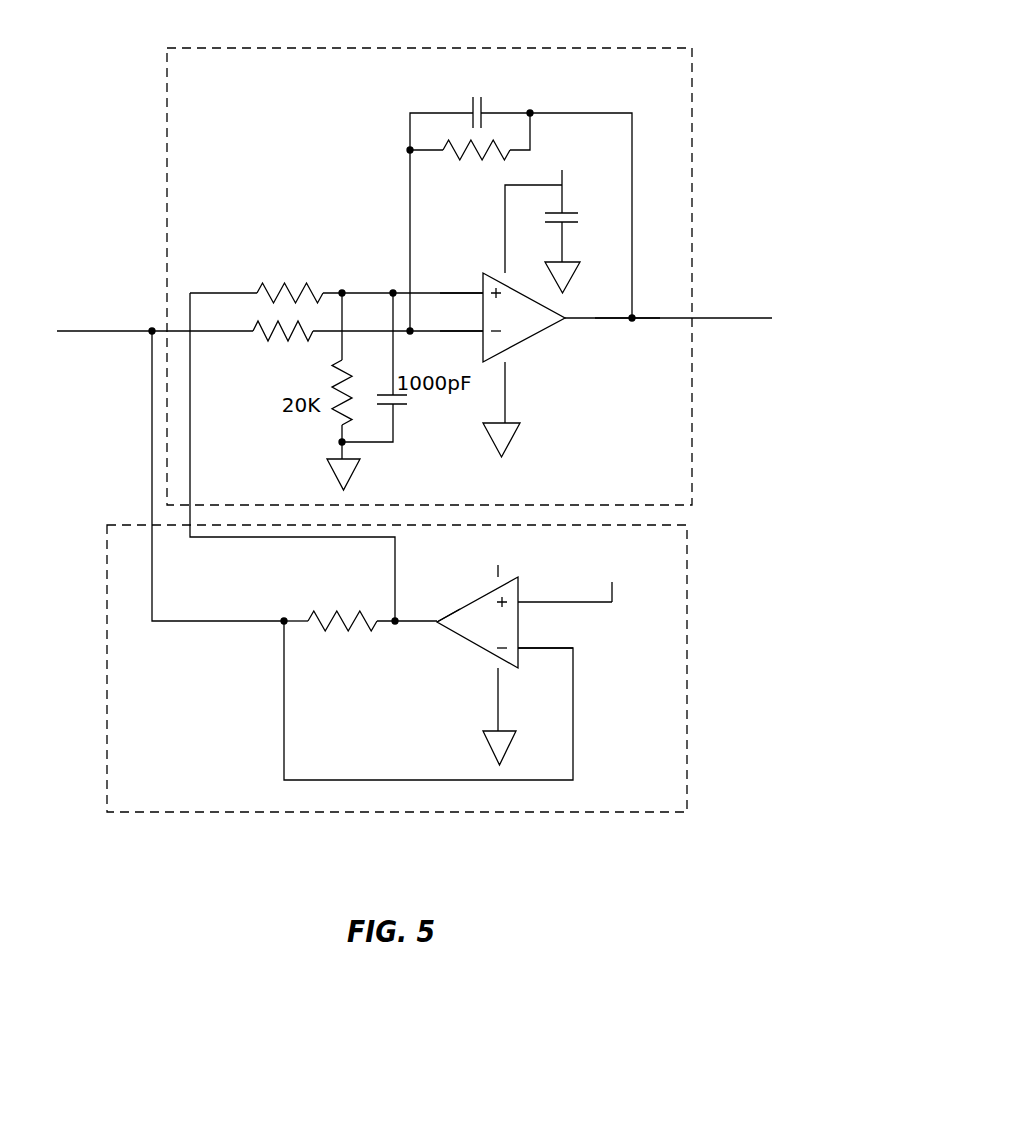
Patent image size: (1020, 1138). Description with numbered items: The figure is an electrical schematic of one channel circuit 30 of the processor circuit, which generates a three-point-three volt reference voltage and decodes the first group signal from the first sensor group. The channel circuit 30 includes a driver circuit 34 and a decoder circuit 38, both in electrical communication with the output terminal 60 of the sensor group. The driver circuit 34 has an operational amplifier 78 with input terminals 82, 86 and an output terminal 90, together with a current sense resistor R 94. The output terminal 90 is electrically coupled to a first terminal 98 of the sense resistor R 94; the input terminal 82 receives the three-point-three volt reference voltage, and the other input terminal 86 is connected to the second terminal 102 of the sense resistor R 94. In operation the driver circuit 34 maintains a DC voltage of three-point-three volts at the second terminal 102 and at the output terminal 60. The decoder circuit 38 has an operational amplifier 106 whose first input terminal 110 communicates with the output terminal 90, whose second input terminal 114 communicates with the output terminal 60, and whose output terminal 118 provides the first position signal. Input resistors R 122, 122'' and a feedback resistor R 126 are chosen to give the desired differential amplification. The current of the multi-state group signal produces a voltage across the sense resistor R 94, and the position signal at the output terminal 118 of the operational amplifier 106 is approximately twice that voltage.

The channel circuit 30 is at (782, 80).
The decoder circuit 38 is at (692, 180).
The driver circuit 34 is at (687, 629).
The output terminal 60 is at (138, 331).
The input resistor 122 is at (336, 423).
The input resistor 122'' is at (340, 364).
The feedback resistor 126 is at (502, 160).
The operational amplifier 106 is at (527, 337).
The first input terminal 110 is at (480, 292).
The second input terminal 114 is at (482, 337).
The output terminal 118 is at (615, 320).
The current sense resistor 94 is at (332, 607).
The second terminal 102 is at (285, 621).
The first terminal 98 is at (395, 628).
The operational amplifier 78 is at (478, 652).
The output terminal 90 is at (440, 618).
The input terminal 82 is at (520, 600).
The input terminal 86 is at (522, 647).